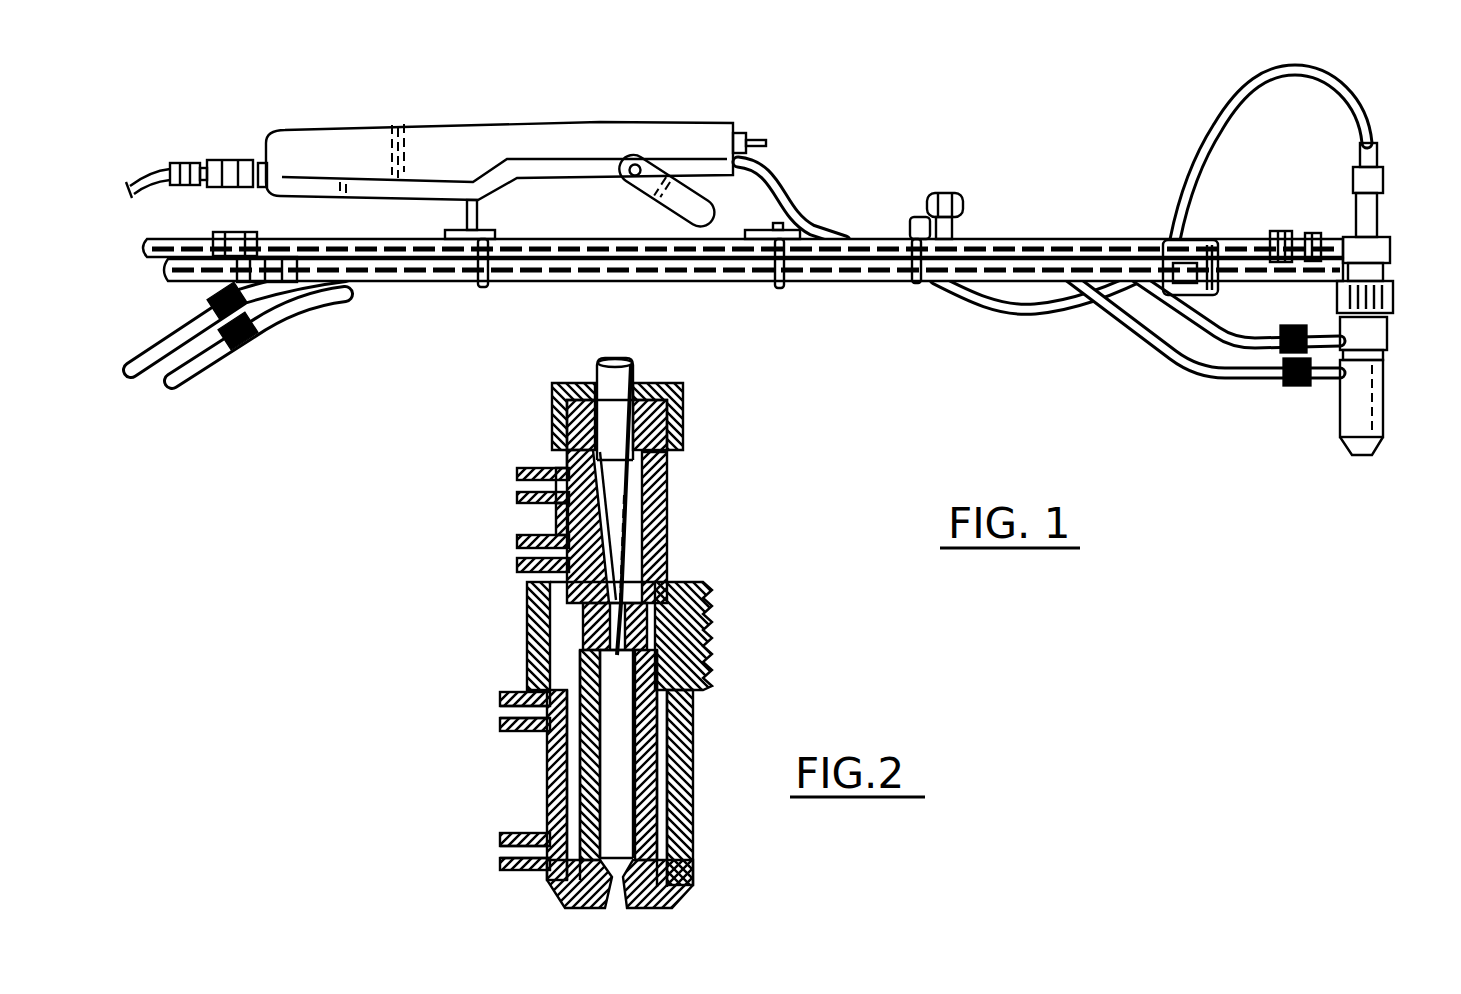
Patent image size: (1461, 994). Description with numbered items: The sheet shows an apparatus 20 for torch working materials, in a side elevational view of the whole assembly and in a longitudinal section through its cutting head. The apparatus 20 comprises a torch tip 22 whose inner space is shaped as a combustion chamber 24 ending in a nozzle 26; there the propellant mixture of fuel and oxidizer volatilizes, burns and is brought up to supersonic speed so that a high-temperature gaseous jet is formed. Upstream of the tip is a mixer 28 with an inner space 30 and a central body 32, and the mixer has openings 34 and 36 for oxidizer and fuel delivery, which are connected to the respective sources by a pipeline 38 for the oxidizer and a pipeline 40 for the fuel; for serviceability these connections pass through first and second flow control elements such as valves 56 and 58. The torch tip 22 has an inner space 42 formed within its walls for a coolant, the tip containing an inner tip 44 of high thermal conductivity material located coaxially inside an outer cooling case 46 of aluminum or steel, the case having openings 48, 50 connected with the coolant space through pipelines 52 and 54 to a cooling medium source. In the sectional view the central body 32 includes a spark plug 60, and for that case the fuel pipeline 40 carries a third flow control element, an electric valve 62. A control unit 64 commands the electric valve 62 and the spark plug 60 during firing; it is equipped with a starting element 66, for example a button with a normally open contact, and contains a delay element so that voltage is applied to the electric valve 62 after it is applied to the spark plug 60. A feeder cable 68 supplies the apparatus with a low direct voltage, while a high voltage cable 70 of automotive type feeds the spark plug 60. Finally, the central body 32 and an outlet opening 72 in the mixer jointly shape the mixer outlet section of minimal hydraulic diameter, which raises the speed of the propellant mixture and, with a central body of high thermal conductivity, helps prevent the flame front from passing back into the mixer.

In FIG. 1, the apparatus 20 is at (934, 355).
In FIG. 1, the torch tip 22 is at (1343, 410).
In FIG. 2, the torch tip 22 is at (614, 779).
In FIG. 2, the combustion chamber 24 is at (617, 768).
In FIG. 2, the nozzle 26 is at (632, 880).
In FIG. 1, the mixer 28 is at (1380, 273).
In FIG. 2, the mixer 28 is at (660, 548).
In FIG. 2, the inner space 30 is at (658, 523).
In FIG. 1, the central body 32 is at (1380, 207).
In FIG. 2, the central body 32 is at (637, 497).
In FIG. 2, the opening 34 is at (568, 462).
In FIG. 2, the opening 36 is at (566, 532).
In FIG. 1, the pipeline 38 is at (1333, 243).
In FIG. 2, the pipeline 38 is at (522, 468).
In FIG. 1, the pipeline 40 is at (1278, 240).
In FIG. 2, the pipeline 40 is at (520, 566).
In FIG. 2, the inner space 42 is at (664, 843).
In FIG. 2, the inner tip 44 is at (648, 750).
In FIG. 2, the outer cooling case 46 is at (690, 790).
In FIG. 2, the opening 48 is at (510, 715).
In FIG. 2, the opening 50 is at (547, 820).
In FIG. 1, the pipeline 52 is at (1225, 346).
In FIG. 2, the pipeline 52 is at (507, 690).
In FIG. 1, the pipeline 54 is at (1172, 360).
In FIG. 2, the pipeline 54 is at (510, 833).
In FIG. 1, the valve 56 is at (912, 274).
In FIG. 1, the valve 58 is at (958, 226).
In FIG. 2, the spark plug 60 is at (668, 447).
In FIG. 1, the electric valve 62 is at (1190, 252).
In FIG. 1, the control unit 64 is at (586, 128).
In FIG. 1, the starting element 66 is at (668, 190).
In FIG. 1, the feeder cable 68 is at (154, 176).
In FIG. 1, the high voltage cable 70 is at (1342, 97).
In FIG. 2, the outlet opening 72 is at (703, 590).